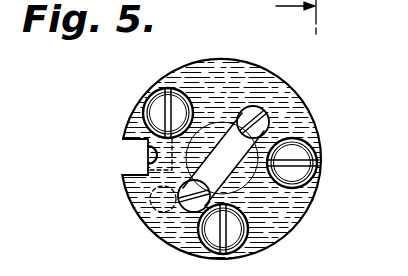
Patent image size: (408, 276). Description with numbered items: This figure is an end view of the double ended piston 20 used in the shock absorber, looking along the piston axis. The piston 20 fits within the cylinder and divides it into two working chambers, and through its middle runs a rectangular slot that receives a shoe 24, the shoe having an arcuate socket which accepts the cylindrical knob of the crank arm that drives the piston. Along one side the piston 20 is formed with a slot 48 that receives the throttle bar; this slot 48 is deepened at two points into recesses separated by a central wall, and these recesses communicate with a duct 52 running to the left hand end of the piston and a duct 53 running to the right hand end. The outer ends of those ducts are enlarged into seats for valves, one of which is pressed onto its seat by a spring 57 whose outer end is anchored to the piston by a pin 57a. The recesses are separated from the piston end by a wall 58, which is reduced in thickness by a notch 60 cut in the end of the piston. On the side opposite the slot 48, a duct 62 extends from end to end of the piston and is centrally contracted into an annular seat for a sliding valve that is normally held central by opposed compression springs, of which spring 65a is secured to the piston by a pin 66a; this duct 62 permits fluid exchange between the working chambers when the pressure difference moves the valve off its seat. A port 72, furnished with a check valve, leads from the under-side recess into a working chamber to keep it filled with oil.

The piston 20 is at (280, 77).
The shoe 24 is at (286, 17).
The slot 48 is at (126, 171).
The duct 52 is at (152, 206).
The duct 53 is at (194, 112).
The spring 57 is at (147, 97).
The pin 57a is at (176, 89).
The wall 58 is at (148, 157).
The notch 60 is at (146, 149).
The duct 62 is at (303, 138).
The compression spring 65a is at (312, 146).
The pin 66a is at (319, 163).
The port 72 is at (247, 234).